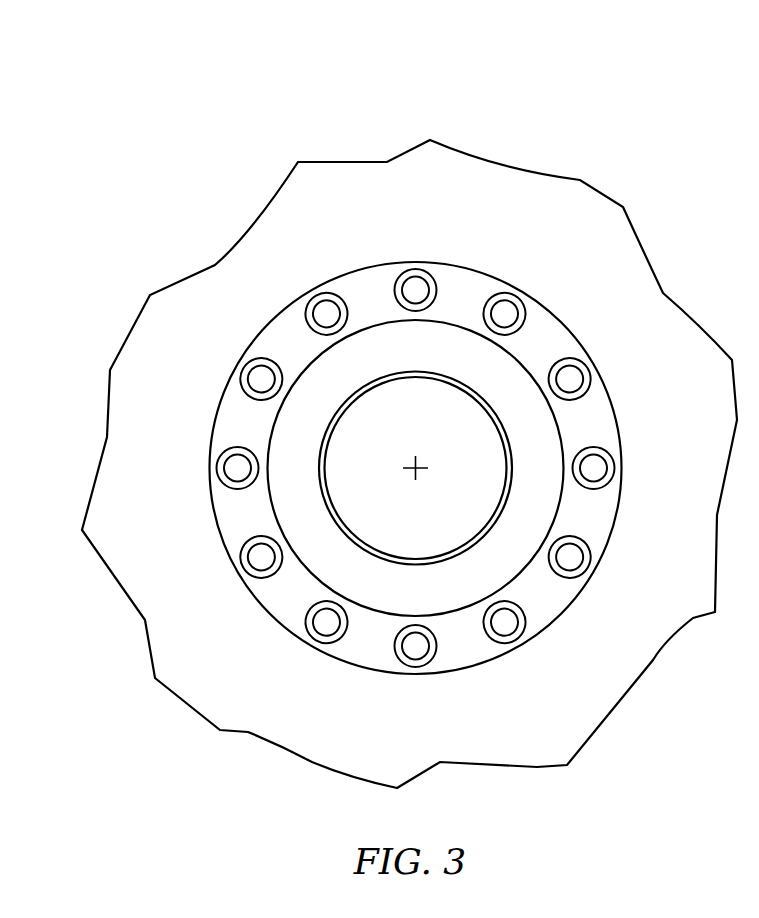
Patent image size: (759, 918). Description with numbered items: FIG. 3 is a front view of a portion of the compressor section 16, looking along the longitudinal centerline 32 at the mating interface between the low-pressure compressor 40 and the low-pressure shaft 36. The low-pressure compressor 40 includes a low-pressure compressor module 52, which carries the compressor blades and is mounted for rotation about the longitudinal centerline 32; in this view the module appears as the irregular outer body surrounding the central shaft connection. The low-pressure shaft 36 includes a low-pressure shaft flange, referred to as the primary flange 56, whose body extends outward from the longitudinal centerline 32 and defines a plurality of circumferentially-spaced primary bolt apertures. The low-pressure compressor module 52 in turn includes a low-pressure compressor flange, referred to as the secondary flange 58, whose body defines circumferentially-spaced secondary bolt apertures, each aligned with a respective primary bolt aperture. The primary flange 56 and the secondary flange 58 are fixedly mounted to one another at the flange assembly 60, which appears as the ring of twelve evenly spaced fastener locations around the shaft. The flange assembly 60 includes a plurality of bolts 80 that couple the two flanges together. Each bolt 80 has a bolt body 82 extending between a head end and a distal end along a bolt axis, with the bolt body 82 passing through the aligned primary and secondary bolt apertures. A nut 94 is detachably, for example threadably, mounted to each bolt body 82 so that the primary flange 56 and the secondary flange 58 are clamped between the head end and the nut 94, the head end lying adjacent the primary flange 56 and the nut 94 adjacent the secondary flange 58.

The compressor section 16 is at (597, 109).
The low-pressure compressor 40 is at (618, 734).
The low-pressure compressor module 52 is at (368, 198).
The flange assembly 60 is at (248, 302).
The secondary flange 58 is at (461, 288).
The primary flange 56 is at (493, 376).
The low-pressure shaft 36 is at (342, 459).
The longitudinal centerline 32 is at (423, 472).
The bolt body 82 is at (233, 462).
The nut 94 is at (217, 473).
The bolt 80 is at (223, 495).